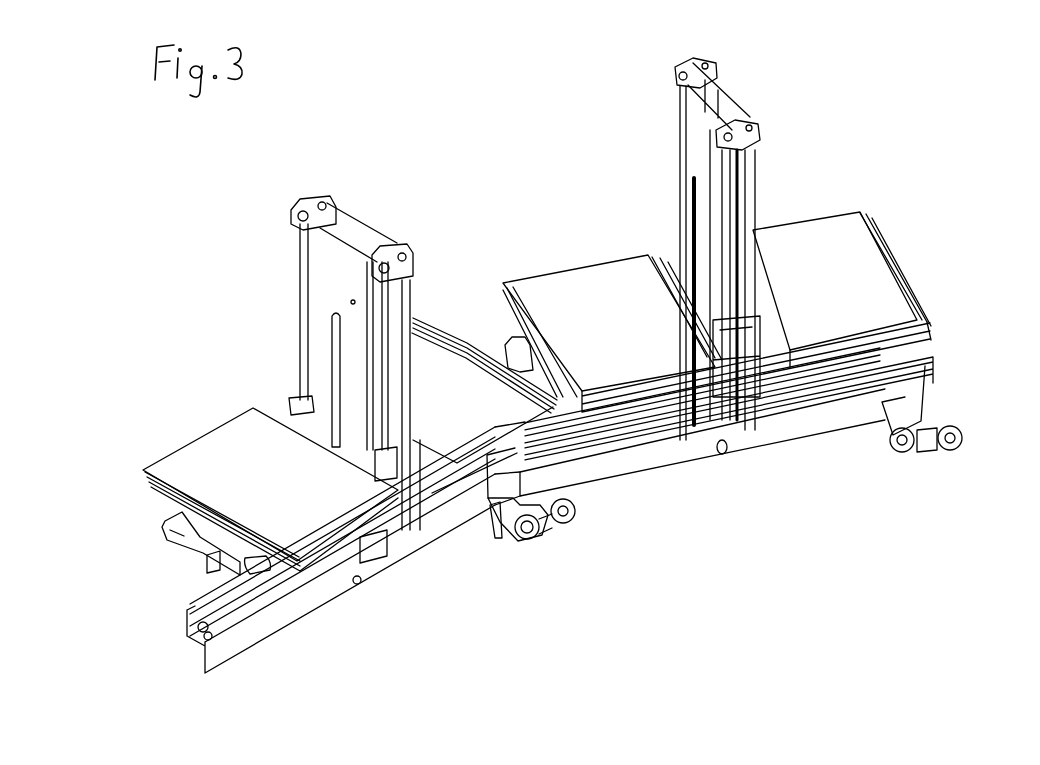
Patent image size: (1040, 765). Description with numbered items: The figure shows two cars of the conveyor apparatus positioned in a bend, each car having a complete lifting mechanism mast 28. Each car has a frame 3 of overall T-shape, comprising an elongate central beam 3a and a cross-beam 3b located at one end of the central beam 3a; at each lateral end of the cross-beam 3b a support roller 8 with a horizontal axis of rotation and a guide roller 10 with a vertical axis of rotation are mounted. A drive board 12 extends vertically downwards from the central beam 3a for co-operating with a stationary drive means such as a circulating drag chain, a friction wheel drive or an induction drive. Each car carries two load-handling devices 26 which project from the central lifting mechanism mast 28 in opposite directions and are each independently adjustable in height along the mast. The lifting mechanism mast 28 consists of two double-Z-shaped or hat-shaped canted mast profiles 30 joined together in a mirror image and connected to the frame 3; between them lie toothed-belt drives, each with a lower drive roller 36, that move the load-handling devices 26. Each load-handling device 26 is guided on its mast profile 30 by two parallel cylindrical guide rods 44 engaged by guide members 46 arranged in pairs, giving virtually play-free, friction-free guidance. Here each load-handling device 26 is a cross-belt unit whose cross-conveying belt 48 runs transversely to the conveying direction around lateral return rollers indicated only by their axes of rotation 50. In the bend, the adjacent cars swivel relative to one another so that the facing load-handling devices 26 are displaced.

The frame 3 is at (819, 457).
The central beam 3a is at (310, 600).
The cross-beam 3b is at (505, 503).
The support roller 8 is at (577, 506).
The guide roller 10 is at (520, 548).
The drive board 12 is at (232, 648).
The load-handling device 26 is at (194, 408).
The lifting mechanism mast 28 is at (383, 200).
The mast profile 30 is at (680, 95).
The lower drive roller 36 is at (907, 400).
The guide rod 44 is at (298, 247).
The guide member 46 is at (290, 400).
The cross-conveying belt 48 is at (585, 290).
The axis of rotation 50 is at (130, 485).